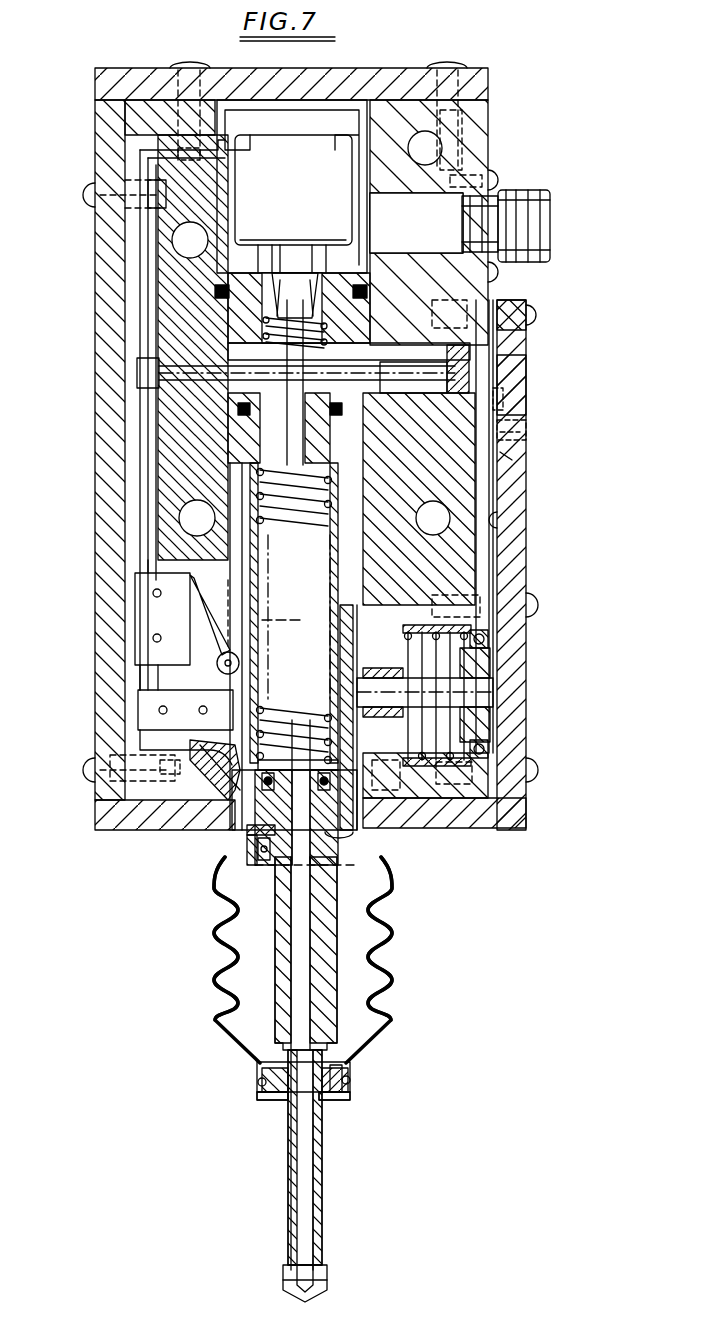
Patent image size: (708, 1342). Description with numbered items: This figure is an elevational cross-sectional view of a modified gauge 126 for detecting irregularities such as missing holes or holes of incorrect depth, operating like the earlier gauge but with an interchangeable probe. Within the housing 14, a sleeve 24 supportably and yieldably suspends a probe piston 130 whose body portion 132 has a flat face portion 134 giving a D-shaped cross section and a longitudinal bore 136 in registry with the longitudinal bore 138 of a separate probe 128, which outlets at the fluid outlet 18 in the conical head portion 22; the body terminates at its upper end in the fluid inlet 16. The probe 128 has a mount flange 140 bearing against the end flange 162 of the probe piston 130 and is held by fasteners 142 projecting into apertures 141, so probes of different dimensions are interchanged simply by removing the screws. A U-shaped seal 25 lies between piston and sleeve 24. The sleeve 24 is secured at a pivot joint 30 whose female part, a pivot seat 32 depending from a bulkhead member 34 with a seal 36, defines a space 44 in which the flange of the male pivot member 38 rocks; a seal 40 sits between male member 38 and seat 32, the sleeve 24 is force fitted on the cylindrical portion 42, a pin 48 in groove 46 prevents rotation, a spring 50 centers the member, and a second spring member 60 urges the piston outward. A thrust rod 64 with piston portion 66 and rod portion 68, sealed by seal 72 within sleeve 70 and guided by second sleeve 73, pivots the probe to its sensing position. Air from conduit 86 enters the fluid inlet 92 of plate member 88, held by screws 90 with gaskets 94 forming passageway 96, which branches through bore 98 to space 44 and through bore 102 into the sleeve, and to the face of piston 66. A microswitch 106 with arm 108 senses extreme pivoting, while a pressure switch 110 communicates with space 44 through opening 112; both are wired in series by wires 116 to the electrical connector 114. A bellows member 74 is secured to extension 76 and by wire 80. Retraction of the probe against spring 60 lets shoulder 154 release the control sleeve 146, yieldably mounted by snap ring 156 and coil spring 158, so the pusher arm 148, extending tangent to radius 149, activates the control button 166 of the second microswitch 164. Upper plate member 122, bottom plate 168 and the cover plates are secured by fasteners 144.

The housing 14 is at (158, 316).
The fluid inlet 16 is at (304, 792).
The fluid outlet 18 is at (290, 1282).
The head portion 22 is at (327, 1284).
The sleeve 24 is at (336, 563).
The seal 25 is at (360, 836).
The pivot joint 30 is at (376, 324).
The pivot seat 32 is at (365, 440).
The bulkhead member 34 is at (228, 328).
The seal 36 is at (214, 292).
The male pivot member 38 is at (238, 412).
The seal 40 is at (360, 404).
The cylindrical portion 42 is at (250, 425).
The space 44 is at (137, 364).
The groove 46 is at (330, 352).
The pin 48 is at (137, 373).
The spring 50 is at (287, 320).
The second spring member 60 is at (303, 726).
The thrust rod 64 is at (365, 688).
The piston portion 66 is at (472, 666).
The rod portion 68 is at (440, 692).
The sleeve 70 is at (500, 770).
The seal 72 is at (485, 640).
The second sleeve 73 is at (384, 680).
The bellows member 74 is at (394, 1030).
The extension 76 is at (240, 862).
The wire 80 is at (352, 1084).
The conduit 86 is at (568, 428).
The plate member 88 is at (512, 372).
The screws 90 is at (530, 318).
The fluid inlet 92 is at (522, 458).
The resilient gasket members 94 is at (505, 318).
The passageway 96 is at (493, 527).
The bore 98 is at (513, 398).
The bore 102 is at (300, 500).
The microswitch 106 is at (160, 618).
The arm 108 is at (200, 648).
The pressure switch 110 is at (292, 186).
The opening 112 is at (283, 285).
The electrical connector 114 is at (550, 212).
The wires 116 is at (148, 498).
The upper plate member 122 is at (130, 80).
The modified gauge 126 is at (518, 155).
The probe 128 is at (288, 1168).
The probe piston 130 is at (285, 1015).
The body portion 132 is at (328, 980).
The flat face portion 134 is at (280, 975).
The longitudinal bore 136 is at (380, 922).
The longitudinal bore 138 is at (305, 1180).
The mount flange 140 is at (268, 1098).
The apertures 141 is at (345, 1072).
The fasteners 142 is at (373, 1115).
The fasteners 144 is at (191, 64).
The control sleeve 146 is at (245, 805).
The pusher arm 148 is at (205, 776).
The radius 149 is at (296, 617).
The shoulder 154 is at (245, 830).
The snap ring 156 is at (238, 880).
The coil spring 158 is at (265, 870).
The end flange 162 is at (300, 1068).
The second microswitch 164 is at (159, 708).
The control button 166 is at (138, 725).
The bottom plate 168 is at (500, 830).